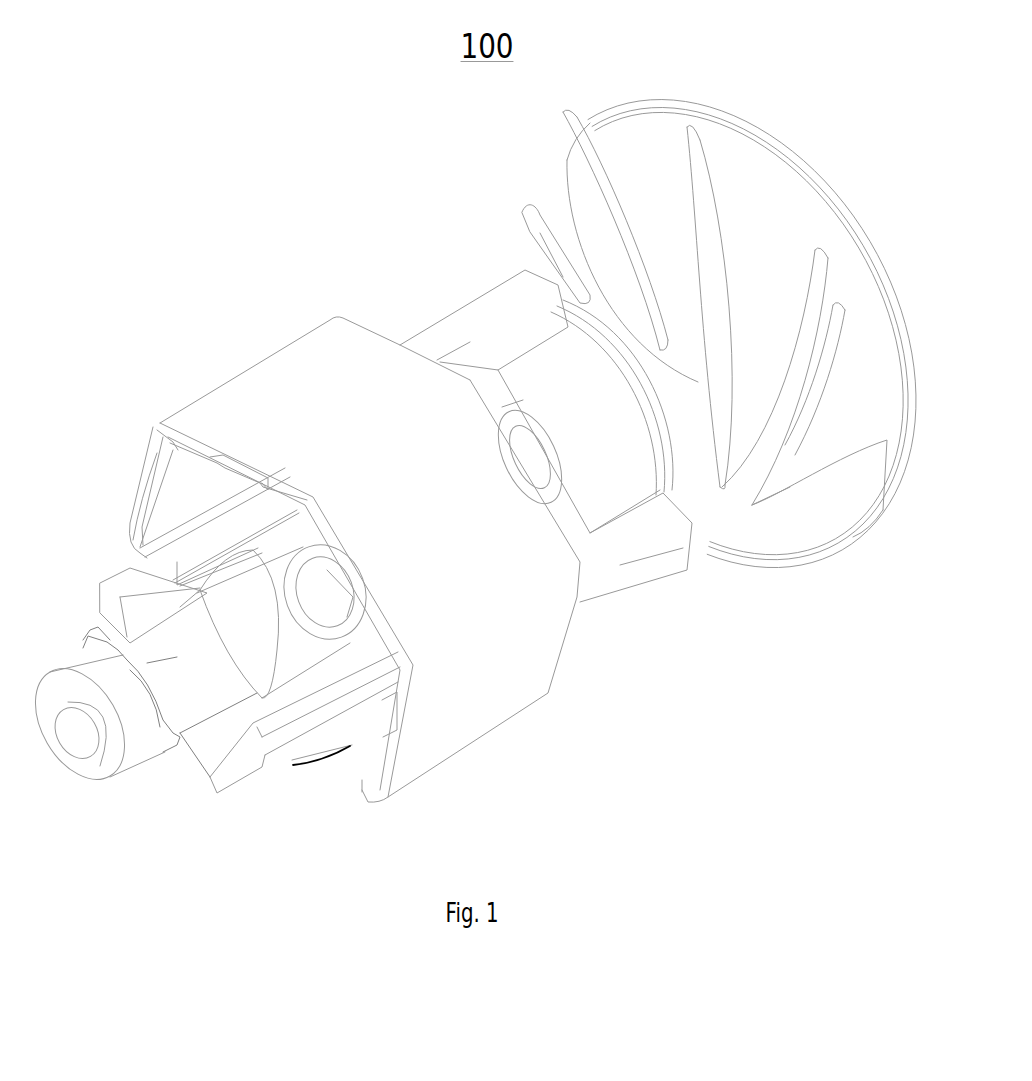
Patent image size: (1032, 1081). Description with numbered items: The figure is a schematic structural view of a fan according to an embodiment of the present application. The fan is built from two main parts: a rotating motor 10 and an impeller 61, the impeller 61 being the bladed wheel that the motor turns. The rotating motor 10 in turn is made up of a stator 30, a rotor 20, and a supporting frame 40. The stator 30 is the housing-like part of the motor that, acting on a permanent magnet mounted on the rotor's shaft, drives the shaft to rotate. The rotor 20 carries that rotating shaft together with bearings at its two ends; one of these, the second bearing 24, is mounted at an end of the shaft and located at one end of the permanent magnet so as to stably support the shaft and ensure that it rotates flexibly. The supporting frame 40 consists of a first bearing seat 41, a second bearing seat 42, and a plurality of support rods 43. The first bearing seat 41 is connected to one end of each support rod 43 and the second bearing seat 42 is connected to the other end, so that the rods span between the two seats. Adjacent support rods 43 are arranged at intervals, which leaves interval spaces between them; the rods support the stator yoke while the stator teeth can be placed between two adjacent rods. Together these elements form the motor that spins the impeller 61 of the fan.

The rotating motor 10 is at (385, 267).
The rotor 20 is at (73, 758).
The second bearing 24 is at (163, 720).
The stator 30 is at (452, 723).
The supporting frame 40 is at (258, 728).
The first bearing seat 41 is at (622, 482).
The second bearing seat 42 is at (160, 637).
The support rod 43 is at (168, 535).
The impeller 61 is at (763, 540).